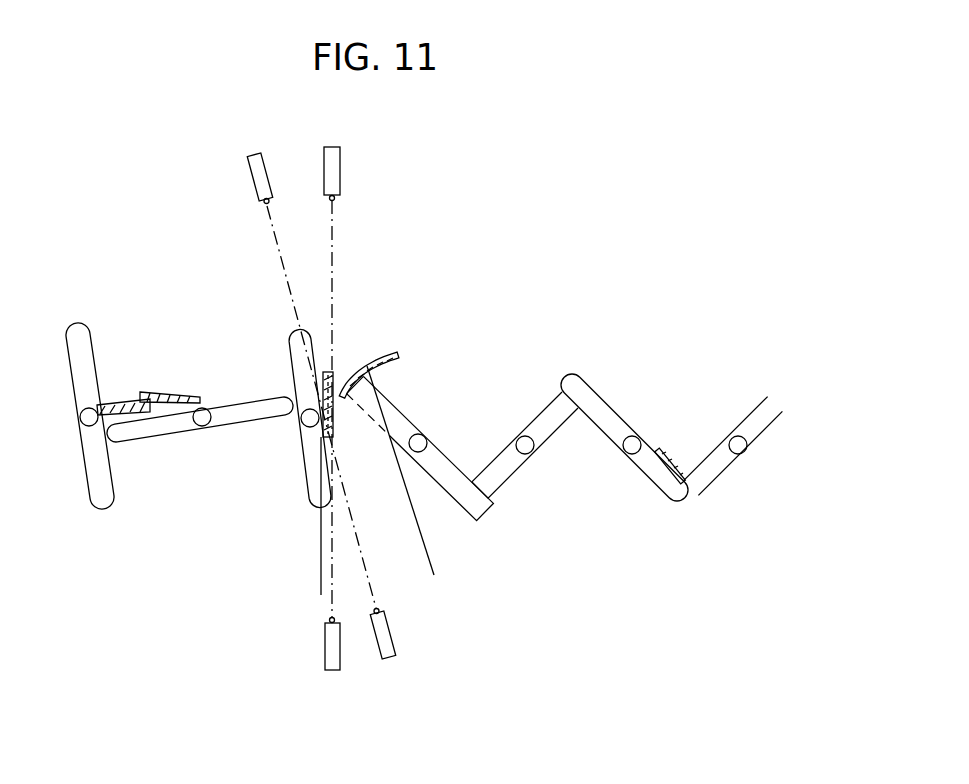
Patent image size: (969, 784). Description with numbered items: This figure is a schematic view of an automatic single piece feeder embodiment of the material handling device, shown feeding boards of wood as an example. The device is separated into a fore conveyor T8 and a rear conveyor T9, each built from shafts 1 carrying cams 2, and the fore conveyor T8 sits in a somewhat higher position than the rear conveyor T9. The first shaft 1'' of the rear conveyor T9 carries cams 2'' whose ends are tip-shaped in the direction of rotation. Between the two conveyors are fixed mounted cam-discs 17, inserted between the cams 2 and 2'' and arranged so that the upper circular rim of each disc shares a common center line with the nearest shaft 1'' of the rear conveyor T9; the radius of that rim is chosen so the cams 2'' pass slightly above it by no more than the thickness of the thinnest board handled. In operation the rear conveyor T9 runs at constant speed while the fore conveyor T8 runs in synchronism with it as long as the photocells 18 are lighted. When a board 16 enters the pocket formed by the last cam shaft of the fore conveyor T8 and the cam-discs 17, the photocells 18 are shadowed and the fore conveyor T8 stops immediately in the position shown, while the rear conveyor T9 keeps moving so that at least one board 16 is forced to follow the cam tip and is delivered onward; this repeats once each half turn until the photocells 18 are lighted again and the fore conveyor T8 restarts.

The shaft 1 is at (413, 480).
The cam 2 is at (506, 451).
The board 16 is at (147, 391).
The cam-disc 17 is at (408, 532).
The photocell 18 is at (330, 160).
The first shaft 1'' is at (448, 379).
The cam 2'' is at (435, 414).
The fore conveyor T8 is at (118, 381).
The rear conveyor T9 is at (613, 393).